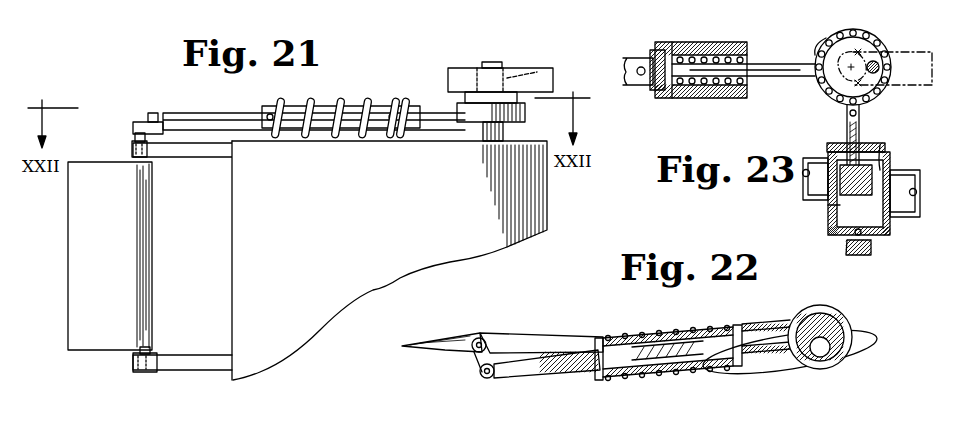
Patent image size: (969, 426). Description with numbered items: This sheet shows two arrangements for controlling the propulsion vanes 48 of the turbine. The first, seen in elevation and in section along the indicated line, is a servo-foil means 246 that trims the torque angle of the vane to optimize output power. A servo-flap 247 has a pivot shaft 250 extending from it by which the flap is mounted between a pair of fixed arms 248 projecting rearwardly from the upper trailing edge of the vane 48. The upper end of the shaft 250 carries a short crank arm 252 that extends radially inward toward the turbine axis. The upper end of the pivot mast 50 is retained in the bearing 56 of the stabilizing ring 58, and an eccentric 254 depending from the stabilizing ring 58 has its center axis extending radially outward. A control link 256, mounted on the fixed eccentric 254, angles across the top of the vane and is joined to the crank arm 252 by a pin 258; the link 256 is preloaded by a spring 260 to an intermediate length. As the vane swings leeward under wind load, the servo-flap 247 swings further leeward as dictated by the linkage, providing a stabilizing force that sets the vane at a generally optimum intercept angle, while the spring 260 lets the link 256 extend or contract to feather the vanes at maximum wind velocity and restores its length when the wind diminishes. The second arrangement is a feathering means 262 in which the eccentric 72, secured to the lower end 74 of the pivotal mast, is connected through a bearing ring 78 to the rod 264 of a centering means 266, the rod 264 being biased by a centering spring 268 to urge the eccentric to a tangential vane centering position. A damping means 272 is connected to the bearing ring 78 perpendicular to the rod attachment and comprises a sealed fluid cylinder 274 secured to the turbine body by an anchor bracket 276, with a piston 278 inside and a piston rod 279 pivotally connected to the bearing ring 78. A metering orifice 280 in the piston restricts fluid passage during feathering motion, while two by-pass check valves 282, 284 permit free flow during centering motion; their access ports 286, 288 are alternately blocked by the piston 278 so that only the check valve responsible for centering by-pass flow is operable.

In FIG. 21, the propulsion vane 48 is at (542, 212).
In FIG. 21, the pivot mast 50 is at (504, 132).
In FIG. 22, the pivot mast 50 is at (820, 357).
In FIG. 21, the bearing 56 is at (520, 72).
In FIG. 21, the stabilizing ring 58 is at (464, 68).
In FIG. 23, the eccentric 72 is at (880, 44).
In FIG. 23, the lower end of pivotal mast 74 is at (880, 70).
In FIG. 23, the bearing ring 78 is at (809, 45).
In FIG. 21, the servo-foil means 246 is at (86, 356).
In FIG. 22, the servo-foil means 246 is at (416, 336).
In FIG. 21, the servo-flap 247 is at (124, 251).
In FIG. 22, the servo-flap 247 is at (446, 346).
In FIG. 21, the fixed arms 248 is at (205, 158).
In FIG. 22, the fixed arms 248 is at (544, 333).
In FIG. 21, the pivot shaft 250 is at (150, 350).
In FIG. 22, the pivot shaft 250 is at (482, 338).
In FIG. 21, the crank arm 252 is at (135, 128).
In FIG. 22, the crank arm 252 is at (478, 364).
In FIG. 21, the eccentric 254 is at (520, 98).
In FIG. 22, the eccentric 254 is at (835, 315).
In FIG. 21, the control link 256 is at (375, 98).
In FIG. 22, the control link 256 is at (650, 372).
In FIG. 21, the pin 258 is at (156, 118).
In FIG. 22, the pin 258 is at (488, 379).
In FIG. 21, the spring 260 is at (338, 96).
In FIG. 22, the spring 260 is at (656, 334).
In FIG. 23, the feathering means 262 is at (732, 104).
In FIG. 23, the rod 264 is at (760, 63).
In FIG. 23, the centering means 266 is at (652, 54).
In FIG. 23, the centering spring 268 is at (704, 54).
In FIG. 23, the damping means 272 is at (822, 142).
In FIG. 23, the sealed fluid cylinder 274 is at (842, 140).
In FIG. 23, the anchor bracket 276 is at (847, 247).
In FIG. 23, the piston 278 is at (859, 193).
In FIG. 23, the piston rod 279 is at (861, 130).
In FIG. 23, the metering orifice 280 is at (880, 152).
In FIG. 23, the fluid by-pass check valve 282 is at (915, 202).
In FIG. 23, the fluid by-pass check valve 284 is at (808, 178).
In FIG. 23, the access port 286 is at (891, 173).
In FIG. 23, the access port 288 is at (832, 200).